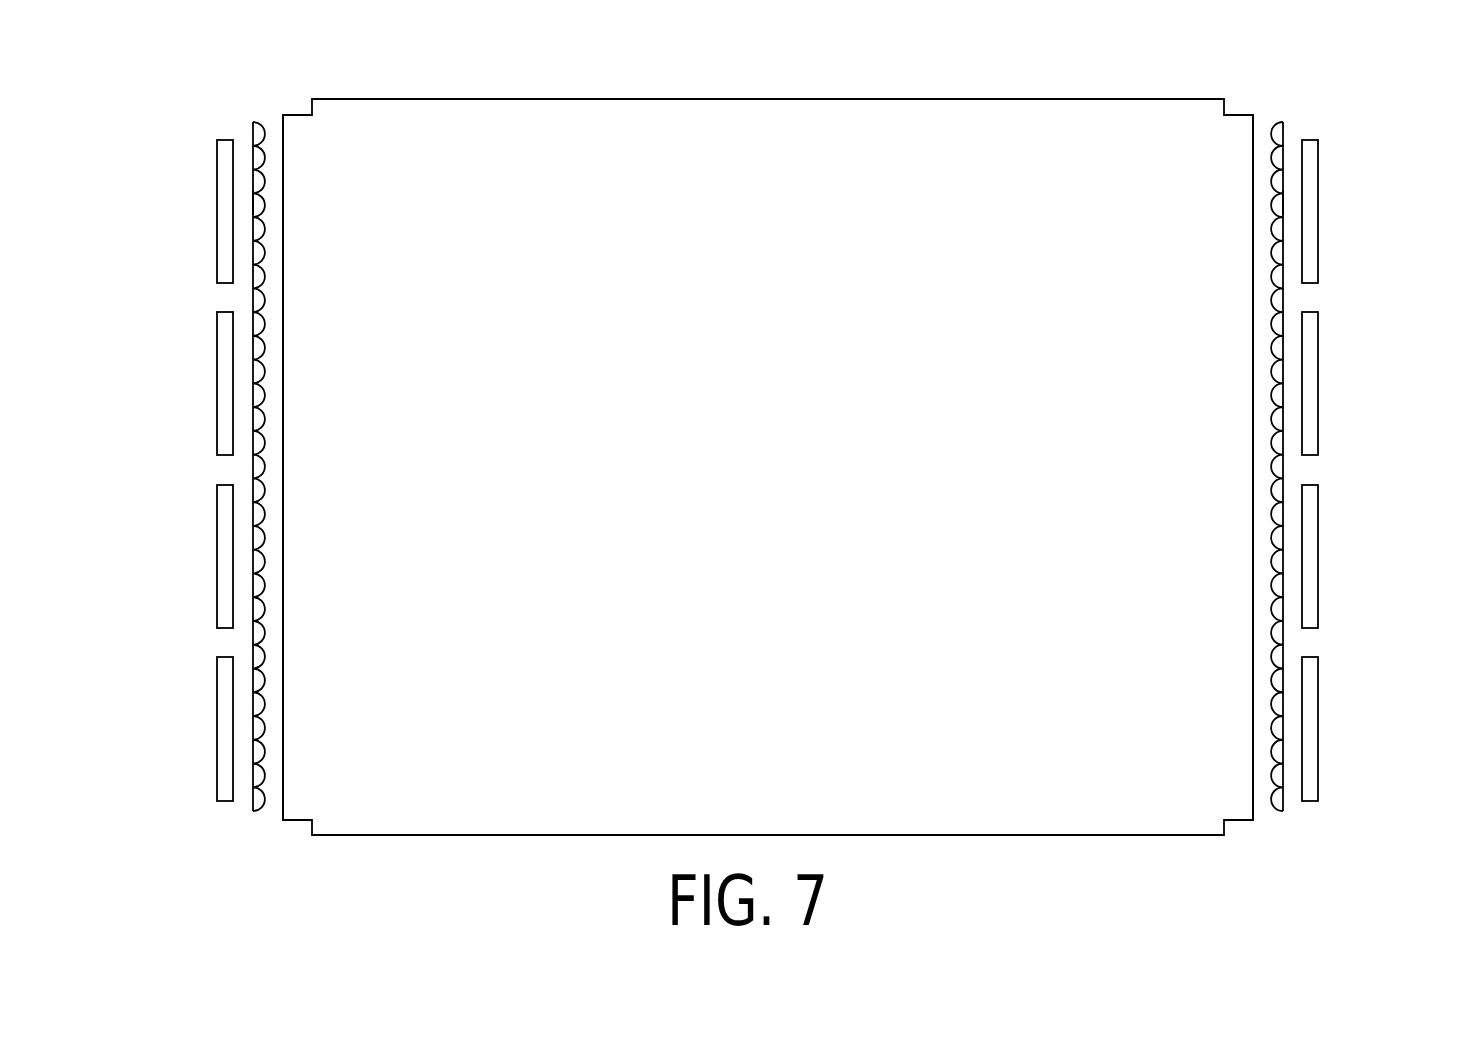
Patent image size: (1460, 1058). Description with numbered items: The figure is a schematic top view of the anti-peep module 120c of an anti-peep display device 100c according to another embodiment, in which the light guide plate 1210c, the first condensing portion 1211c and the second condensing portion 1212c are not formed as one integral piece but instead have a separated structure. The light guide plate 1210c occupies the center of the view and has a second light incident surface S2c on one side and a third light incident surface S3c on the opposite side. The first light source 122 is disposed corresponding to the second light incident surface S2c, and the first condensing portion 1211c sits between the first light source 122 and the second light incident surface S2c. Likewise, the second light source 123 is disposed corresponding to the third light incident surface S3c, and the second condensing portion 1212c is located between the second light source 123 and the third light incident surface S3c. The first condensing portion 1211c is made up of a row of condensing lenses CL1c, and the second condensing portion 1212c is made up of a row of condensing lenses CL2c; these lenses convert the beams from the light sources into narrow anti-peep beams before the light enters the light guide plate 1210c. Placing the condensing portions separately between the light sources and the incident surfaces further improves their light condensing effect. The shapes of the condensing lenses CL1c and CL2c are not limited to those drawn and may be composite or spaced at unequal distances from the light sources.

The anti-peep display device 100c is at (157, 43).
The anti-peep module 120c is at (447, 92).
The light guide plate 1210c is at (756, 120).
The first condensing portion 1211c is at (252, 134).
The second condensing portion 1212c is at (1278, 133).
The second light incident surface S2c is at (278, 128).
The third light incident surface S3c is at (1257, 127).
The condensing lens CL1c is at (260, 203).
The condensing lens CL2c is at (1273, 203).
The first light source 122 is at (225, 255).
The second light source 123 is at (1308, 253).